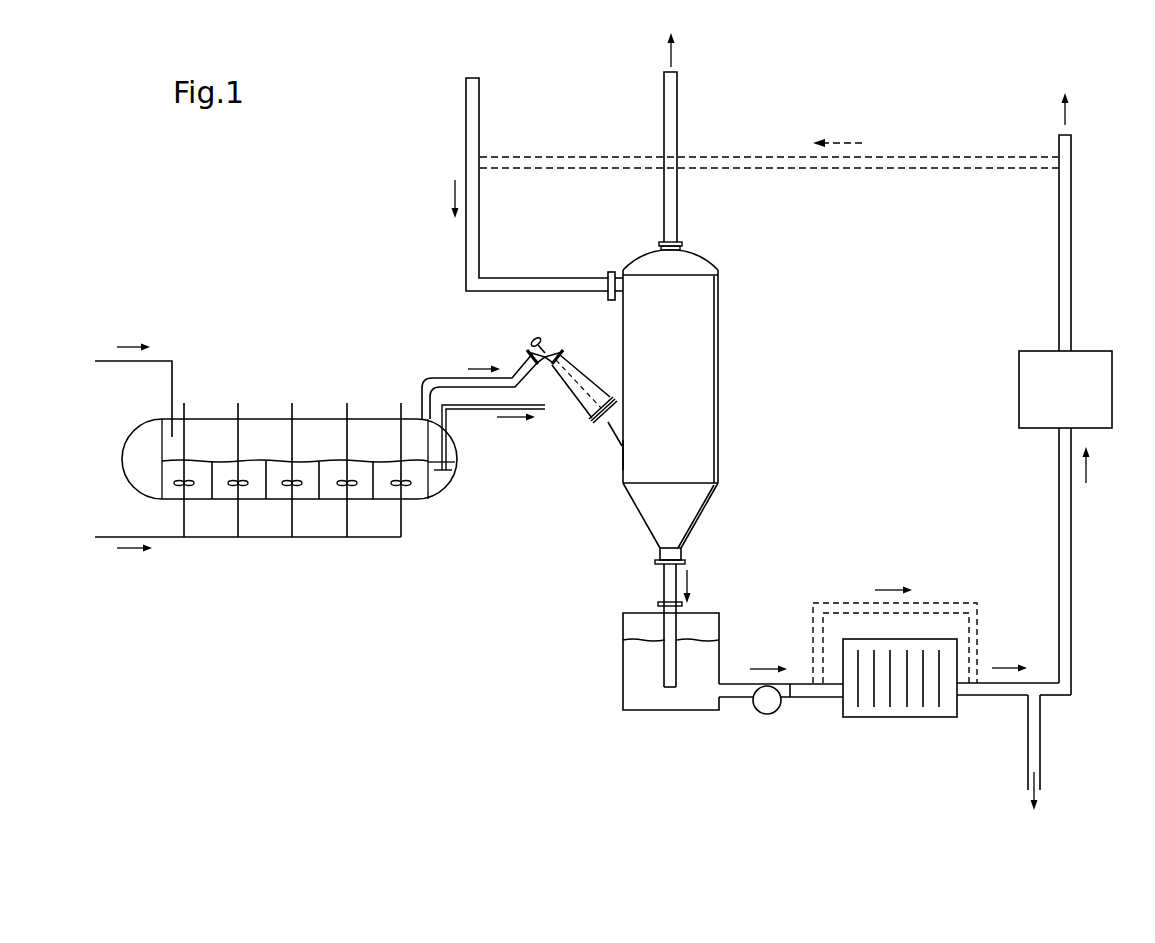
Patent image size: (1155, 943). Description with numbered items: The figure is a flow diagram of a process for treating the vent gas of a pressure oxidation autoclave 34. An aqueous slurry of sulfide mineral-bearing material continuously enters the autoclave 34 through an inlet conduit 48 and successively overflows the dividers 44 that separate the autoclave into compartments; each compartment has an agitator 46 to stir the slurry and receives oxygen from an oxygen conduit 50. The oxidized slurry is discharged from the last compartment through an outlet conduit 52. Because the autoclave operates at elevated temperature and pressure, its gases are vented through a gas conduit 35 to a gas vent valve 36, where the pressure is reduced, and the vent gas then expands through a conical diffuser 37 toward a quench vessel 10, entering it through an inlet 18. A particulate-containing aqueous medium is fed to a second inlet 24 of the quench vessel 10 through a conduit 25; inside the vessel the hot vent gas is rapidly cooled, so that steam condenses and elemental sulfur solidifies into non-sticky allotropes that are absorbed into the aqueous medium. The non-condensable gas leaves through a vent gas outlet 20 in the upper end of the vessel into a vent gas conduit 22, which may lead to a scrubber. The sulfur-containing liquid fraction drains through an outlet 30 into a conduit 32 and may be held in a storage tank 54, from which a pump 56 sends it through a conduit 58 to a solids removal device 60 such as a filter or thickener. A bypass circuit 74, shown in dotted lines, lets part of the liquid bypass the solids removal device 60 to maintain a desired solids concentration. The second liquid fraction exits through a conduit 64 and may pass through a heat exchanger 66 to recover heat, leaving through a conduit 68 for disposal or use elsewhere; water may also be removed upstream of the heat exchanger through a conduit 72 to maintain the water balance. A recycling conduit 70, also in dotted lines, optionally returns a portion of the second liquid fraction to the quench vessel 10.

The quench vessel 10 is at (720, 340).
The inlet 18 is at (622, 455).
The vent gas outlet 20 is at (683, 247).
The vent gas conduit 22 is at (678, 143).
The second inlet 24 is at (620, 270).
The conduit 25 is at (479, 232).
The outlet 30 is at (684, 561).
The conduit 32 is at (658, 603).
The autoclave 34 is at (442, 490).
The gas conduit 35 is at (443, 378).
The gas vent valve 36 is at (558, 354).
The conical diffuser 37 is at (583, 400).
The dividers 44 is at (212, 458).
The agitator 46 is at (183, 402).
The inlet conduit 48 is at (155, 357).
The oxygen conduit 50 is at (217, 538).
The outlet conduit 52 is at (488, 410).
The storage tank 54 is at (640, 682).
The pump 56 is at (763, 714).
The conduit 58 is at (800, 697).
The solids removal device 60 is at (877, 718).
The conduit 64 is at (995, 696).
The heat exchanger 66 is at (1077, 406).
The conduit 68 is at (1072, 183).
The recycling conduit 70 is at (933, 172).
The conduit 72 is at (1042, 748).
The bypass circuit 74 is at (832, 604).